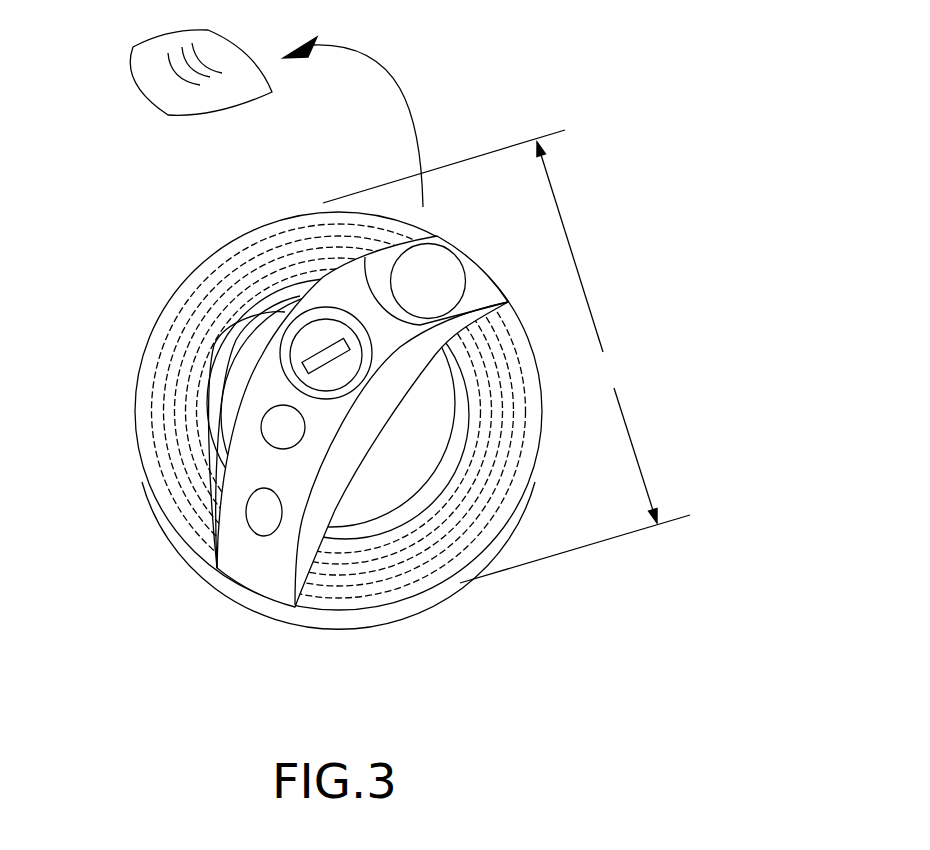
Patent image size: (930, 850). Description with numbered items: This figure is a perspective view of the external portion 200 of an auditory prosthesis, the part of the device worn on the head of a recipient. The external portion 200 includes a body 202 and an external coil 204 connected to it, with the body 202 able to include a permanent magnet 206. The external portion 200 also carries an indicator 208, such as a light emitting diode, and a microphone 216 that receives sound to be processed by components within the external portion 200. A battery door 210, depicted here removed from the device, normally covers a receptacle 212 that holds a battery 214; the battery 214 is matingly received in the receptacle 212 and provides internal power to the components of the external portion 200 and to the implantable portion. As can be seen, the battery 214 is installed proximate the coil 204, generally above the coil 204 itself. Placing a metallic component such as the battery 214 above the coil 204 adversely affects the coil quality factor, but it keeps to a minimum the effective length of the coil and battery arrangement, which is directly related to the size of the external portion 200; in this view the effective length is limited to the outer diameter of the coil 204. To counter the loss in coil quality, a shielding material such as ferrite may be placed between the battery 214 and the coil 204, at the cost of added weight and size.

The external portion 200 is at (537, 107).
The body 202 is at (233, 552).
The external coil 204 is at (163, 417).
The permanent magnet 206 is at (312, 337).
The indicator 208 is at (261, 517).
The battery door 210 is at (174, 97).
The receptacle 212 is at (480, 283).
The battery 214 is at (433, 282).
The microphone 216 is at (282, 428).